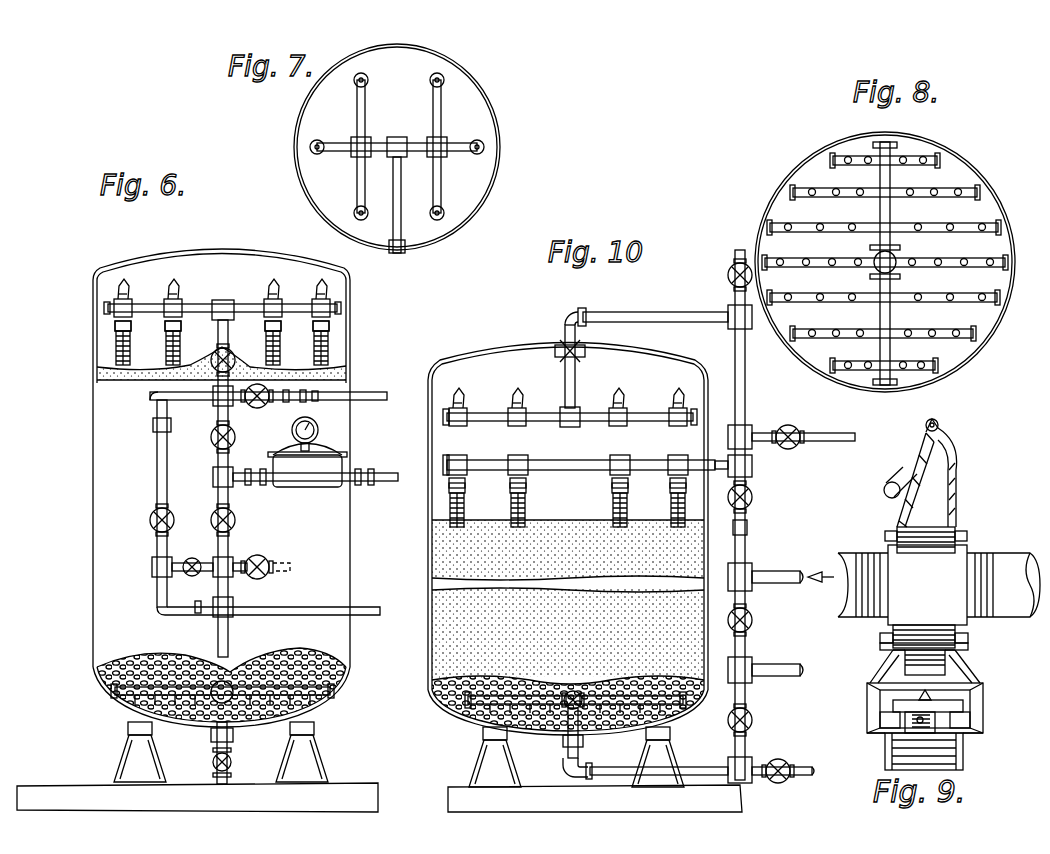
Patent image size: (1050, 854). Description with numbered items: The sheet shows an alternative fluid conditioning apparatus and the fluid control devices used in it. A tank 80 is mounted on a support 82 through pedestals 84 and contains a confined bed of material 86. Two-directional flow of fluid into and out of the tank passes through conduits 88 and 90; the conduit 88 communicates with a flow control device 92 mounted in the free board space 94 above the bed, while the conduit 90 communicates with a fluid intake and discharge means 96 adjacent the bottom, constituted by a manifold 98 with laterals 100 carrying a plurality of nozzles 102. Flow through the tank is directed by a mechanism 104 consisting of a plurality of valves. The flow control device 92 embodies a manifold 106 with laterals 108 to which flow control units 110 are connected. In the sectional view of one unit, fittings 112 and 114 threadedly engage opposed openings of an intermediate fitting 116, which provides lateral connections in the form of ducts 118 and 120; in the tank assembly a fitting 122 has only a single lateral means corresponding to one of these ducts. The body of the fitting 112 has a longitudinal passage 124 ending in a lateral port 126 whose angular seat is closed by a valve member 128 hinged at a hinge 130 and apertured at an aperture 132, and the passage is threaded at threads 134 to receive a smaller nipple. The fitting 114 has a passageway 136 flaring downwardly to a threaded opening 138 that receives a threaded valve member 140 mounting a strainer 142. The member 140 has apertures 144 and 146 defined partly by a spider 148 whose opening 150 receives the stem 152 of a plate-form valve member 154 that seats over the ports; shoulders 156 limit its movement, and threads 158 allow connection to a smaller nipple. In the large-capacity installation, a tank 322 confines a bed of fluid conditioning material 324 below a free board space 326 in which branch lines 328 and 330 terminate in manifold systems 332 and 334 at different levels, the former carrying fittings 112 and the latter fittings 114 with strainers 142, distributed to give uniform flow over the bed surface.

In FIG. 6, the tank 80 is at (93, 346).
In FIG. 7, the tank 80 is at (490, 193).
In FIG. 8, the tank 80 is at (757, 252).
In FIG. 10, the tank 80 is at (738, 260).
In FIG. 6, the support 82 is at (85, 793).
In FIG. 10, the support 82 is at (465, 792).
In FIG. 6, the pedestals 84 is at (130, 748).
In FIG. 10, the pedestals 84 is at (668, 756).
In FIG. 6, the bed of material 86 is at (93, 378).
In FIG. 7, the conduit 88 is at (401, 228).
In FIG. 10, the conduit 88 is at (747, 531).
In FIG. 6, the conduit 90 is at (215, 633).
In FIG. 10, the conduit 90 is at (748, 701).
In FIG. 6, the flow control device 92 is at (195, 300).
In FIG. 6, the free board space 94 is at (152, 270).
In FIG. 6, the fluid intake and discharge means 96 is at (188, 718).
In FIG. 10, the fluid intake and discharge means 96 is at (628, 712).
In FIG. 6, the manifold 98 is at (232, 662).
In FIG. 8, the manifold 98 is at (885, 388).
In FIG. 10, the manifold 98 is at (565, 712).
In FIG. 6, the laterals 100 is at (300, 658).
In FIG. 8, the laterals 100 is at (975, 355).
In FIG. 10, the laterals 100 is at (485, 700).
In FIG. 6, the nozzles 102 is at (265, 720).
In FIG. 10, the nozzles 102 is at (510, 733).
In FIG. 6, the mechanism 104 is at (230, 487).
In FIG. 7, the manifold 106 is at (458, 150).
In FIG. 7, the laterals 108 is at (441, 96).
In FIG. 7, the flow control units 110 is at (487, 147).
In FIG. 6, the fitting 112 is at (321, 288).
In FIG. 9, the fitting 112 is at (958, 466).
In FIG. 10, the fitting 112 is at (515, 407).
In FIG. 6, the fitting 114 is at (330, 328).
In FIG. 9, the fitting 114 is at (965, 690).
In FIG. 10, the fitting 114 is at (449, 490).
In FIG. 9, the intermediate fitting 116 is at (970, 632).
In FIG. 9, the duct 118 is at (855, 553).
In FIG. 9, the duct 120 is at (1005, 560).
In FIG. 6, the fitting 122 is at (332, 308).
In FIG. 10, the fitting 122 is at (700, 417).
In FIG. 9, the longitudinal passage 124 is at (956, 490).
In FIG. 9, the lateral port 126 is at (920, 487).
In FIG. 9, the valve member 128 is at (898, 474).
In FIG. 9, the hinge 130 is at (940, 424).
In FIG. 9, the aperture 132 is at (916, 459).
In FIG. 9, the threads 134 is at (960, 520).
In FIG. 9, the passageway 136 is at (905, 663).
In FIG. 9, the threaded opening 138 is at (976, 712).
In FIG. 9, the valve member 140 is at (985, 745).
In FIG. 6, the strainer 142 is at (330, 350).
In FIG. 9, the strainer 142 is at (965, 755).
In FIG. 10, the strainer 142 is at (449, 518).
In FIG. 9, the aperture 144 is at (880, 713).
In FIG. 9, the aperture 146 is at (968, 702).
In FIG. 9, the spider 148 is at (925, 735).
In FIG. 9, the opening 150 is at (905, 724).
In FIG. 9, the stem 152 is at (930, 748).
In FIG. 9, the valve member 154 is at (885, 697).
In FIG. 9, the shoulders 156 is at (975, 678).
In FIG. 9, the threads 158 is at (882, 646).
In FIG. 10, the tank 322 is at (432, 554).
In FIG. 10, the bed of fluid conditioning material 324 is at (460, 600).
In FIG. 10, the free board space 326 is at (672, 377).
In FIG. 10, the branch line 328 is at (630, 316).
In FIG. 10, the branch line 330 is at (752, 470).
In FIG. 10, the manifold system 332 is at (497, 425).
In FIG. 10, the manifold system 334 is at (578, 462).